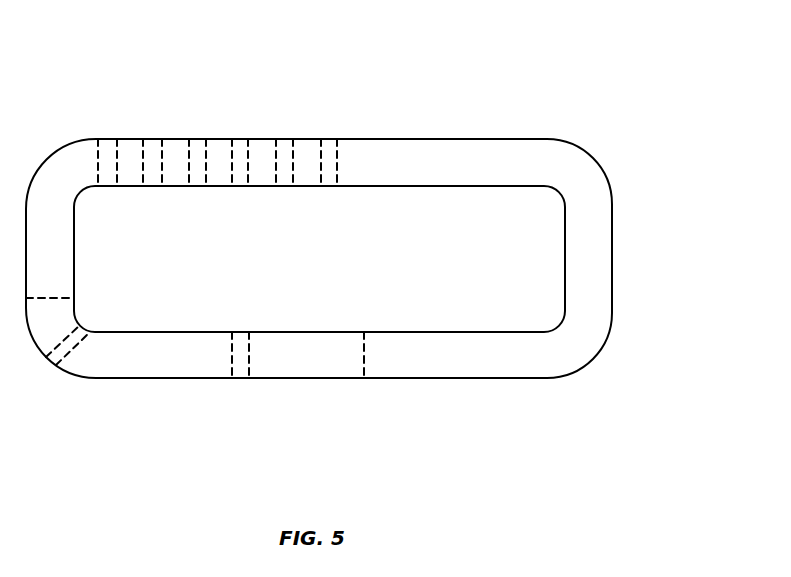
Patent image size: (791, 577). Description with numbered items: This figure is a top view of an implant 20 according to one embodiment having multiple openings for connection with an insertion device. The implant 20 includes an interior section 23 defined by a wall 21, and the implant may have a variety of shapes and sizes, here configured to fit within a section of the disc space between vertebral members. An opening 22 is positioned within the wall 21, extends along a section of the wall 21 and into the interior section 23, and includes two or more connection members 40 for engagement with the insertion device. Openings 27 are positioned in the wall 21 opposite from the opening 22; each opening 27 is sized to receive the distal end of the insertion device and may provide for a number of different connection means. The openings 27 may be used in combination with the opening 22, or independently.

The implant 20 is at (177, 63).
The wall 21 is at (591, 267).
The opening 22 is at (310, 389).
The interior section 23 is at (402, 208).
The openings 27 is at (197, 139).
The connection members 40 is at (48, 360).